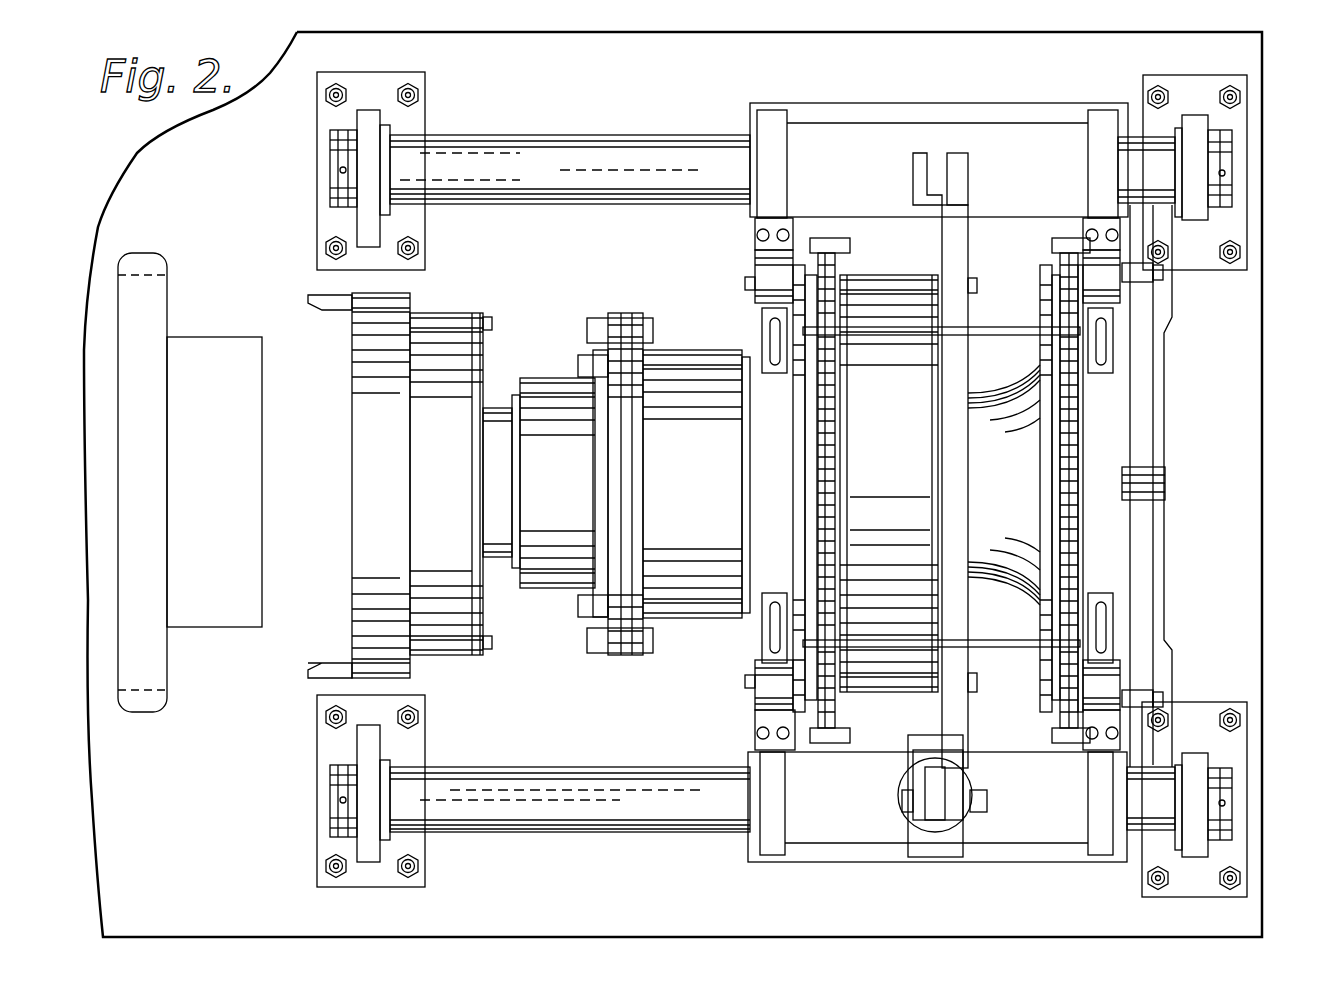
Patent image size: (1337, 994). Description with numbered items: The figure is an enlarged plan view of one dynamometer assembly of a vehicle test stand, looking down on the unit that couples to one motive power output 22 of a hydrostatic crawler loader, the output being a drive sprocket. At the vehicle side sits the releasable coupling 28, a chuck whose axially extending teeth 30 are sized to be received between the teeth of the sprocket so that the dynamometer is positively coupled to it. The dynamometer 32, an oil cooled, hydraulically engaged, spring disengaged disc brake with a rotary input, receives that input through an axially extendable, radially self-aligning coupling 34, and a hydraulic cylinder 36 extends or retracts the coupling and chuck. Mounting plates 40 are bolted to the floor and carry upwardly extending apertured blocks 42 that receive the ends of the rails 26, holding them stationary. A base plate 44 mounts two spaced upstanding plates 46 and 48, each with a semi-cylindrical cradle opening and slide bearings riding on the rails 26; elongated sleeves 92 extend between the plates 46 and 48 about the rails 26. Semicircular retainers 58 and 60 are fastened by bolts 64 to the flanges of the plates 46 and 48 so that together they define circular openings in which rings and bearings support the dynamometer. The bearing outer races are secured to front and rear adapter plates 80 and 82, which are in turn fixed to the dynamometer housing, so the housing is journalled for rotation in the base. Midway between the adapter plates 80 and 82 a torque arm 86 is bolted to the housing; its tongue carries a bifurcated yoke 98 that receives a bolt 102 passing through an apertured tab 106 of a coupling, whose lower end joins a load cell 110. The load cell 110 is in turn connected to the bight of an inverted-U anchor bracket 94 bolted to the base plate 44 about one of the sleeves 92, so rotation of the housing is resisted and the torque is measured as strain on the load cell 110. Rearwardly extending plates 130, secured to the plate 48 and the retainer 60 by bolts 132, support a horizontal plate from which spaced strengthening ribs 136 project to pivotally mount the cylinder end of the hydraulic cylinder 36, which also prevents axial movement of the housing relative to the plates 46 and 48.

The motive power output 22 is at (150, 673).
The rail 26 is at (598, 200).
The releasable coupling 28 is at (470, 308).
The axially extending teeth 30 is at (326, 302).
The dynamometer 32 is at (880, 235).
The coupling 34 is at (565, 335).
The hydraulic cylinder 36 is at (1168, 483).
The mounting plate 40 is at (325, 235).
The apertured block 42 is at (370, 150).
The base plate 44 is at (835, 858).
The plate 46 is at (775, 122).
The plate 48 is at (1100, 125).
The semicircular retainer 58 is at (765, 283).
The semicircular retainer 60 is at (1145, 320).
The bolt 64 is at (766, 228).
The front adapter plate 80 is at (830, 267).
The rear adapter plate 82 is at (1062, 300).
The torque arm 86 is at (960, 228).
The elongated sleeve 92 is at (830, 160).
The anchor bracket 94 is at (933, 855).
The bifurcated yoke 98 is at (960, 172).
The bolt 102 is at (985, 802).
The apertured tab 106 is at (940, 787).
The load cell 110 is at (952, 822).
The rearwardly extending plate 130 is at (1133, 270).
The bolt 132 is at (1165, 272).
The strengthening rib 136 is at (1168, 552).